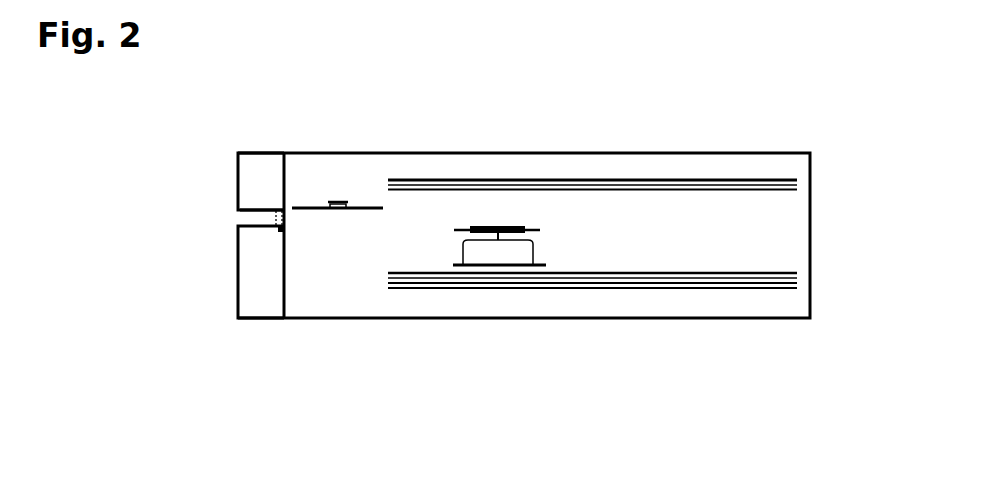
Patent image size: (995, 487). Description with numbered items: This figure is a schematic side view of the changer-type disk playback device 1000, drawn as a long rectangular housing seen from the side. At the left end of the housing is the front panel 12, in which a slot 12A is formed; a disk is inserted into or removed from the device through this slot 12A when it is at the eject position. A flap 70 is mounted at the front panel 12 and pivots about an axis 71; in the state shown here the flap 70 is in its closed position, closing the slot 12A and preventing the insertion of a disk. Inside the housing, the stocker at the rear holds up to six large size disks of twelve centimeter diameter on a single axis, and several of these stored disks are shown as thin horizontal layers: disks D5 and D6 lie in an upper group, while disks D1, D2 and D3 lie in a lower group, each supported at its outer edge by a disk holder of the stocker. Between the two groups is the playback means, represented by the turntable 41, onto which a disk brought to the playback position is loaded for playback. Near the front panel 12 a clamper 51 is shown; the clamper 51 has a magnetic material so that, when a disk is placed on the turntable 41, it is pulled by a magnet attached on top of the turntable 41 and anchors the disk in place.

The changer-type disk playback device 1000 is at (680, 90).
The axis 71 is at (283, 207).
The front panel 12 is at (250, 200).
The slot 12A is at (248, 219).
The flap 70 is at (278, 230).
The clamper 51 is at (310, 203).
The turntable 41 is at (543, 230).
The disk D6 is at (788, 178).
The disk D5 is at (797, 183).
The disk D3 is at (797, 275).
The disk D2 is at (800, 279).
The disk D1 is at (780, 288).